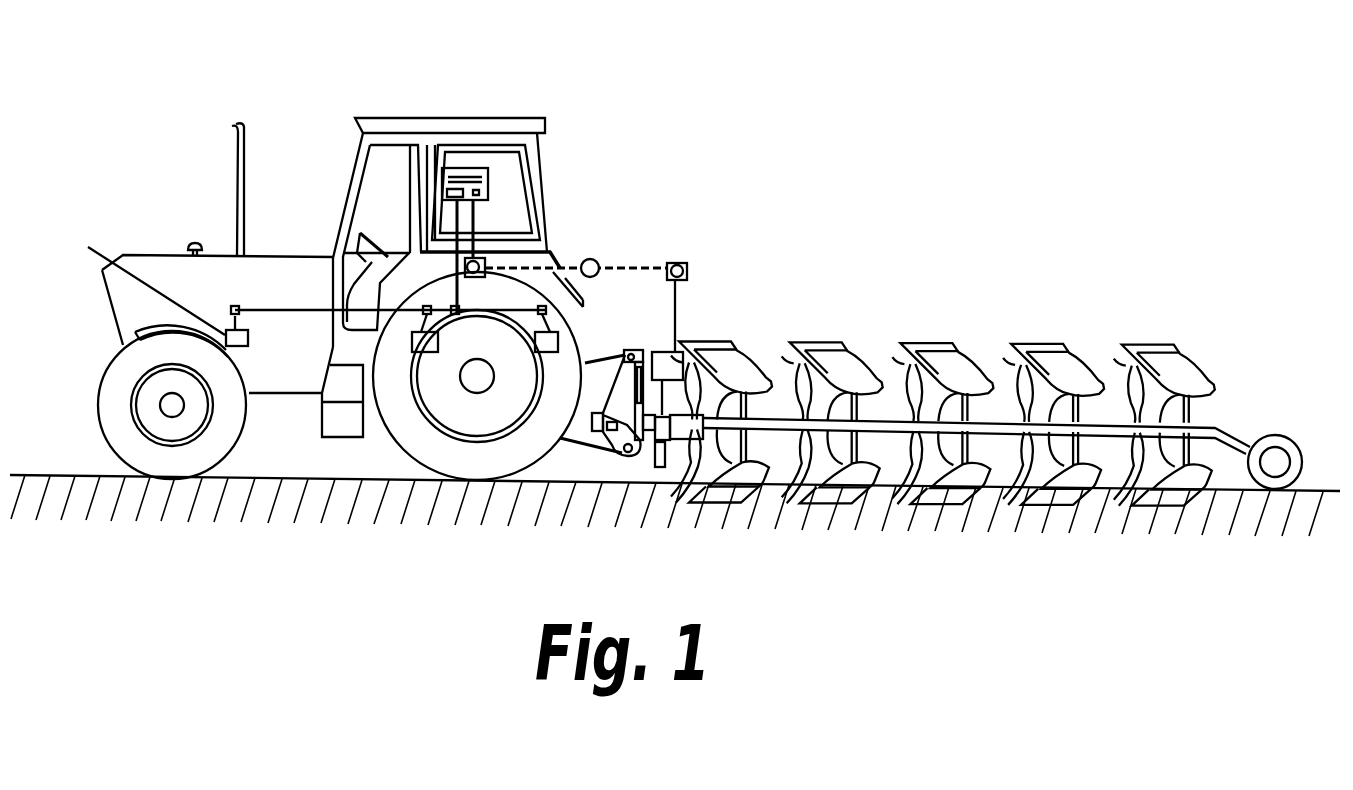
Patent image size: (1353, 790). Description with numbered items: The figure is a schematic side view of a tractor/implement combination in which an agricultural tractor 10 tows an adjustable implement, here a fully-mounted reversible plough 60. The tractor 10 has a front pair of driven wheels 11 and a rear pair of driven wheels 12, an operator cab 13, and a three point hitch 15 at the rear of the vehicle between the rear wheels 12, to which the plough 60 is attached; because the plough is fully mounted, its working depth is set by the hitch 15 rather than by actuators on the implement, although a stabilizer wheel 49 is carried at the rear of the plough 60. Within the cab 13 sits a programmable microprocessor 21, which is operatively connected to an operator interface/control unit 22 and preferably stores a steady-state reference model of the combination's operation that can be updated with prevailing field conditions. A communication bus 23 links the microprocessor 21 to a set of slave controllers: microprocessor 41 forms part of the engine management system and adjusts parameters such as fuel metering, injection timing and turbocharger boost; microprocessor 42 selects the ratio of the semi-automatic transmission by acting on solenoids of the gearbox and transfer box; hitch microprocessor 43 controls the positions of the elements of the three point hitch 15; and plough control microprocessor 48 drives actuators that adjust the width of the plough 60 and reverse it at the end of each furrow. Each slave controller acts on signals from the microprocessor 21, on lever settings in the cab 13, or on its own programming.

The agricultural tractor 10 is at (277, 153).
The front wheels 11 is at (110, 375).
The rear wheels 12 is at (417, 447).
The operator cab 13 is at (535, 172).
The three point hitch 15 is at (598, 352).
The microprocessor 21 is at (488, 172).
The operator interface/control unit 22 is at (452, 168).
The communication bus 23 is at (312, 310).
The microprocessor 41 is at (152, 286).
The microprocessor 42 is at (420, 333).
The hitch microprocessor 43 is at (550, 338).
The plough control microprocessor 48 is at (672, 365).
The stabilizer wheel 49 is at (1288, 443).
The plough 60 is at (1162, 312).